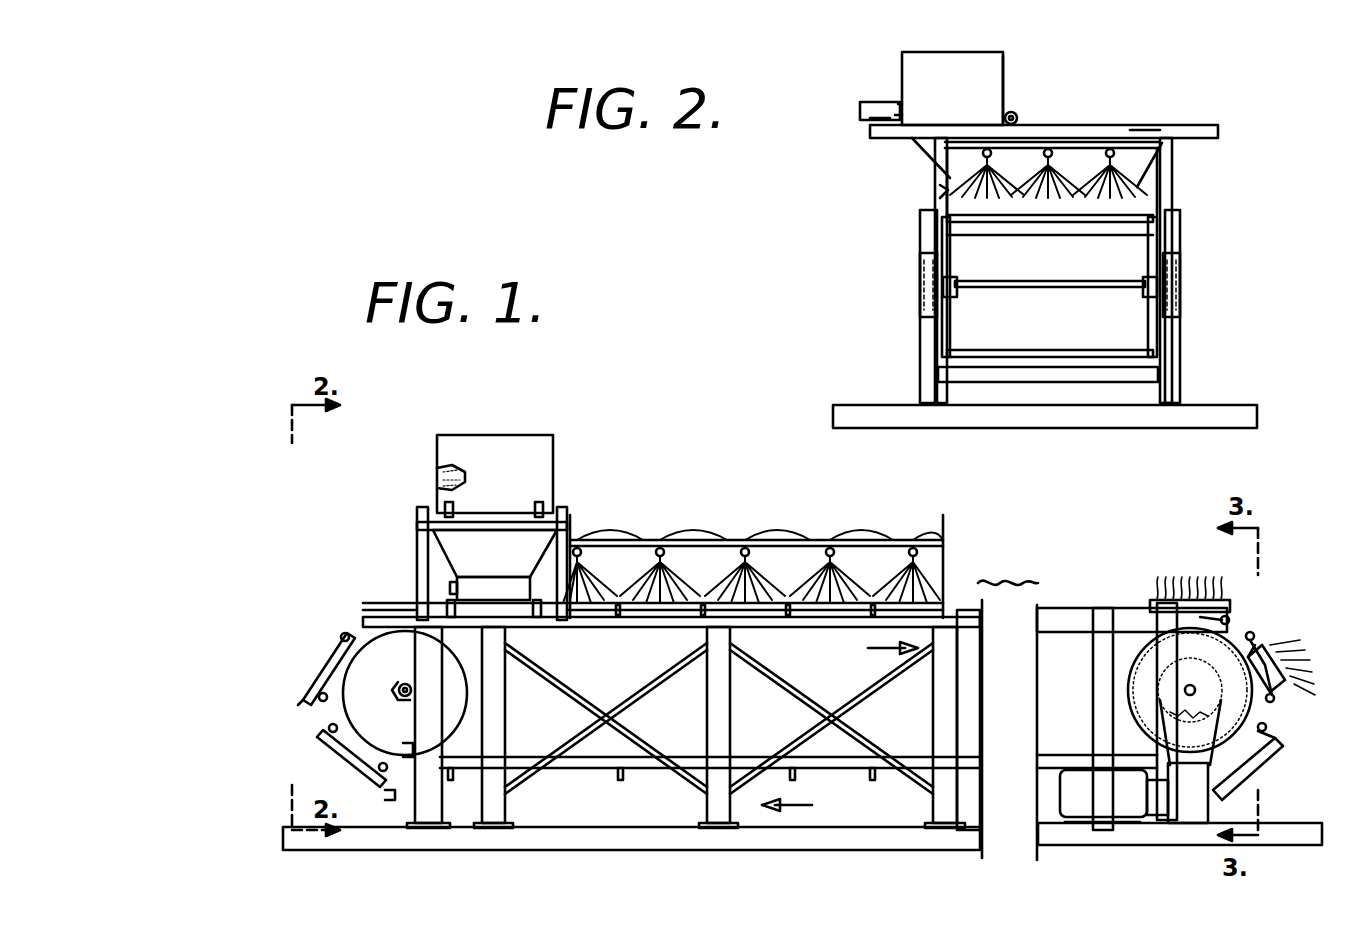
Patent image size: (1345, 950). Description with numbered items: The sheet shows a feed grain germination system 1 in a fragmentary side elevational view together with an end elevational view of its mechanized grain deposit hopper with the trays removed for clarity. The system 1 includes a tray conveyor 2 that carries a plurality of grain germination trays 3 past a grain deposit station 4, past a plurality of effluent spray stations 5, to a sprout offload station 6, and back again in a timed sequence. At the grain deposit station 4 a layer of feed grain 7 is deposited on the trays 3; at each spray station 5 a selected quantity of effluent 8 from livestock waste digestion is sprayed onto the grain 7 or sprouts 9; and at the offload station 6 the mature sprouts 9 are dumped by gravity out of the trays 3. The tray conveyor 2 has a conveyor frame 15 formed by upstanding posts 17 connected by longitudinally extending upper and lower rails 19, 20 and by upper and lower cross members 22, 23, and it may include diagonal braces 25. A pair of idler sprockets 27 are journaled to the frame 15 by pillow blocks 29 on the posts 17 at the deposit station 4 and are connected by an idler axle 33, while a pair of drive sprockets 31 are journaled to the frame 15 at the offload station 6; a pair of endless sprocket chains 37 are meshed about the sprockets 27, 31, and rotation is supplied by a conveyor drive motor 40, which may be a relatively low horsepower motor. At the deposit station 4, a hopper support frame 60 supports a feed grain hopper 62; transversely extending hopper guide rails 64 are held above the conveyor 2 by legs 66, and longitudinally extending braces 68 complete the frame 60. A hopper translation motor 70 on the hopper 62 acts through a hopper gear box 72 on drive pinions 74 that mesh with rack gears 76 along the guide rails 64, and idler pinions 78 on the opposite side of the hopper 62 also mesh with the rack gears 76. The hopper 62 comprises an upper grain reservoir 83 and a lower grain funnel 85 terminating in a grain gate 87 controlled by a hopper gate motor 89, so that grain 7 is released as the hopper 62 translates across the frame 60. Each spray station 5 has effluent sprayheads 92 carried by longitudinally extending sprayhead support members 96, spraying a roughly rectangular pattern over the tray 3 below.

In FIG. 1, the feed grain germination system 1 is at (716, 458).
In FIG. 1, the tray conveyor 2 is at (1073, 608).
In FIG. 1, the grain germination trays 3 is at (330, 625).
In FIG. 2, the grain deposit station 4 is at (1175, 80).
In FIG. 1, the grain deposit station 4 is at (405, 500).
In FIG. 1, the effluent spray stations 5 is at (825, 520).
In FIG. 1, the sprout offload station 6 is at (1245, 615).
In FIG. 1, the feed grain 7 is at (440, 470).
In FIG. 2, the effluent 8 is at (1137, 187).
In FIG. 1, the effluent 8 is at (898, 580).
In FIG. 1, the sprouts 9 is at (1180, 580).
In FIG. 1, the conveyor frame 15 is at (698, 718).
In FIG. 1, the upstanding posts 17 is at (505, 826).
In FIG. 1, the upper rail 19 is at (590, 625).
In FIG. 1, the lower rail 20 is at (832, 768).
In FIG. 2, the upper cross member 22 is at (1015, 242).
In FIG. 2, the lower cross member 23 is at (1052, 382).
In FIG. 1, the diagonal braces 25 is at (565, 732).
In FIG. 2, the idler sprockets 27 is at (948, 330).
In FIG. 1, the idler sprockets 27 is at (475, 658).
In FIG. 1, the pillow blocks 29 is at (400, 692).
In FIG. 1, the drive sprockets 31 is at (1130, 722).
In FIG. 2, the idler axle 33 is at (1040, 287).
In FIG. 1, the endless sprocket chains 37 is at (358, 728).
In FIG. 1, the conveyor drive motor 40 is at (1080, 796).
In FIG. 2, the hopper support frame 60 is at (1222, 132).
In FIG. 2, the feed grain hopper 62 is at (902, 62).
In FIG. 1, the feed grain hopper 62 is at (497, 435).
In FIG. 2, the hopper guide rails 64 is at (1130, 132).
In FIG. 2, the legs 66 is at (1178, 195).
In FIG. 1, the longitudinally extending braces 68 is at (480, 530).
In FIG. 2, the hopper translation motor 70 is at (860, 110).
In FIG. 2, the hopper gear box 72 is at (898, 105).
In FIG. 2, the drive pinions 74 is at (880, 122).
In FIG. 2, the hopper translation rack gears 76 is at (1185, 125).
In FIG. 2, the idler pinions 78 is at (1016, 115).
In FIG. 1, the idler pinions 78 is at (565, 510).
In FIG. 2, the upper grain reservoir 83 is at (1000, 65).
In FIG. 1, the upper grain reservoir 83 is at (545, 445).
In FIG. 1, the lower grain funnel 85 is at (430, 545).
In FIG. 2, the grain gate 87 is at (945, 195).
In FIG. 1, the hopper gate motor 89 is at (450, 590).
In FIG. 2, the effluent sprayheads 92 is at (1110, 150).
In FIG. 1, the effluent sprayheads 92 is at (742, 555).
In FIG. 1, the longitudinally extending sprayhead support members 96 is at (756, 566).